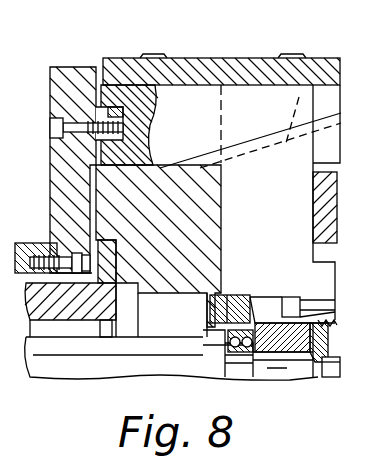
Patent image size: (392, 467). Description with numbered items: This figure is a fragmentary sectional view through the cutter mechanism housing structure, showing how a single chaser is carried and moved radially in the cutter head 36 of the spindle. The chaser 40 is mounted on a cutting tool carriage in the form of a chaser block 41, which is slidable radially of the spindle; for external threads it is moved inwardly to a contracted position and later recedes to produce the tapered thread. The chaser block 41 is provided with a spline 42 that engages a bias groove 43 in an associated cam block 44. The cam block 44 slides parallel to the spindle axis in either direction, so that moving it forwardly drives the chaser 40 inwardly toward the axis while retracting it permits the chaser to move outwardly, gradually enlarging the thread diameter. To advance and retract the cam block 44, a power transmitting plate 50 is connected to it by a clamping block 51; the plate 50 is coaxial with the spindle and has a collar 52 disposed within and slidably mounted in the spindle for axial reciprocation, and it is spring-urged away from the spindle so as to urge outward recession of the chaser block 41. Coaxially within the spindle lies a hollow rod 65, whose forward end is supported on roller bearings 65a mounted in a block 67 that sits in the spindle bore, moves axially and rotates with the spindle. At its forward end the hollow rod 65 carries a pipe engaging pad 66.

The cutter head 36 is at (108, 58).
The cam block 44 is at (178, 105).
The bias groove 43 is at (208, 152).
The spline 42 is at (319, 58).
The plate 50 is at (58, 67).
The clamping block 51 is at (102, 143).
The collar 52 is at (43, 243).
The chaser block 41 is at (202, 287).
The block 67 is at (228, 293).
The roller bearings 65a is at (243, 293).
The chaser 40 is at (325, 323).
The hollow rod 65 is at (70, 345).
The pipe engaging pad 66 is at (314, 357).